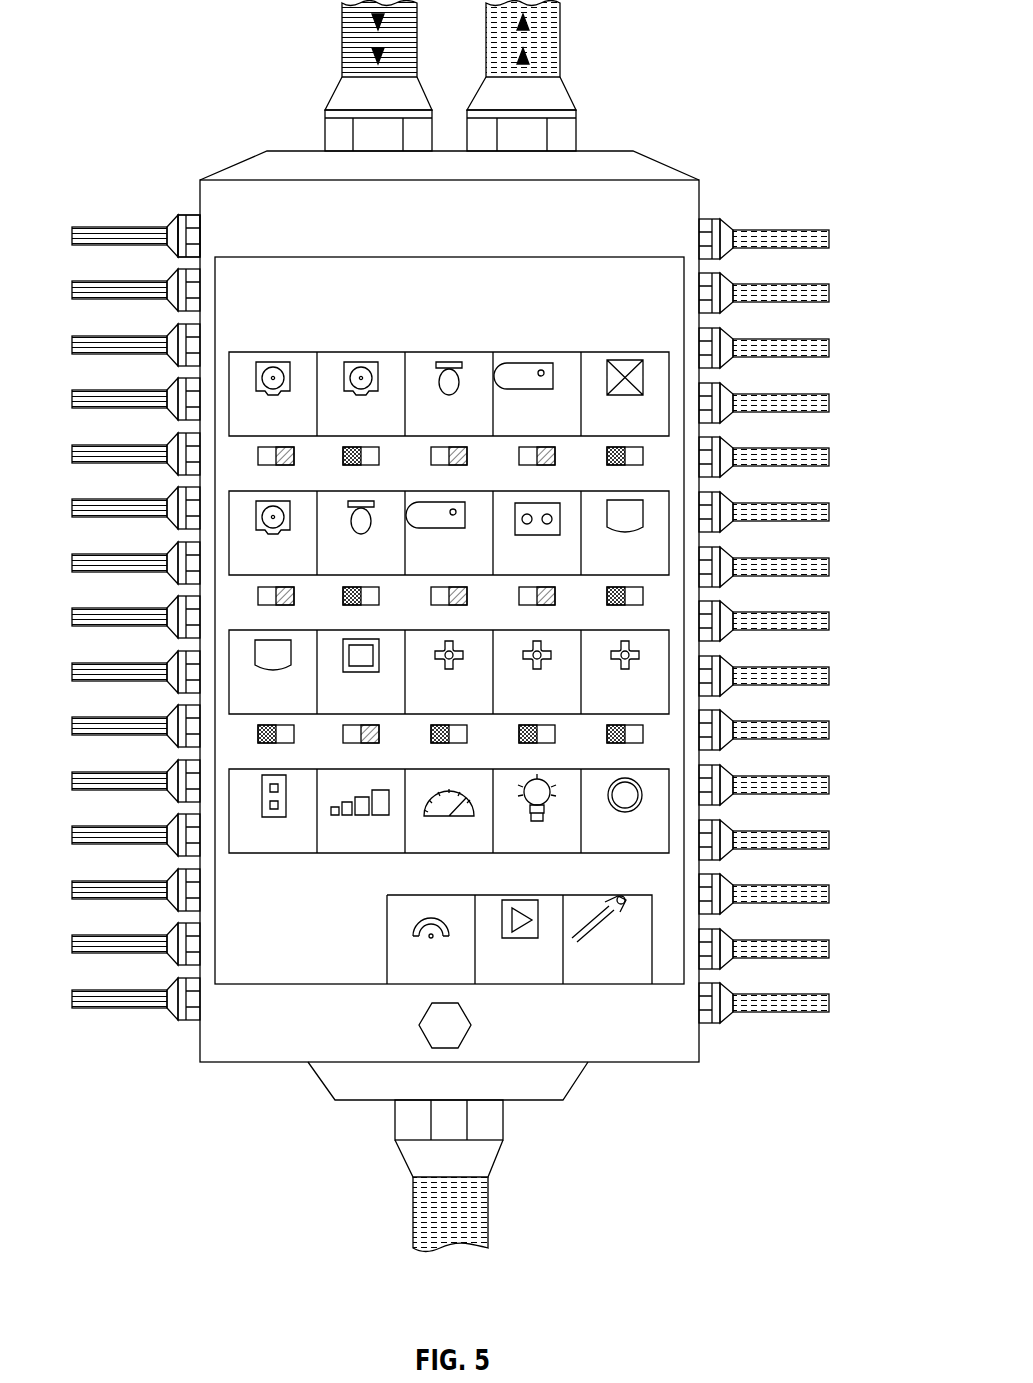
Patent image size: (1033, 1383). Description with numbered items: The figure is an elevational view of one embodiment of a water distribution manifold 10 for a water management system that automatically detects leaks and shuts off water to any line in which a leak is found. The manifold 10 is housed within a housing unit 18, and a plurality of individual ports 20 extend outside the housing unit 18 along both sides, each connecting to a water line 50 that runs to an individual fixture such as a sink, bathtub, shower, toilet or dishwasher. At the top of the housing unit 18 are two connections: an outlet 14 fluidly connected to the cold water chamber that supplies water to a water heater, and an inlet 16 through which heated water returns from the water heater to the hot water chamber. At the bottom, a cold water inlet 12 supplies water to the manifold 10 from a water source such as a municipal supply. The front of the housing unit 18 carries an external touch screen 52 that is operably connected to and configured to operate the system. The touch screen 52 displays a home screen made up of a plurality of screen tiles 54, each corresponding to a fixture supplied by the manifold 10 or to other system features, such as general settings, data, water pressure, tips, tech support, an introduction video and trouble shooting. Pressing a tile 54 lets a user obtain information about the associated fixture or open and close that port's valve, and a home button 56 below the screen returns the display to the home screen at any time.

The water distribution manifold 10 is at (103, 28).
The cold water inlet 12 is at (490, 1212).
The outlet 14 is at (562, 37).
The inlet 16 is at (342, 36).
The housing unit 18 is at (683, 191).
The port 20 is at (178, 219).
The water line 50 is at (92, 228).
The touch screen 52 is at (246, 316).
The screen tile 54 is at (364, 352).
The home button 56 is at (471, 1025).